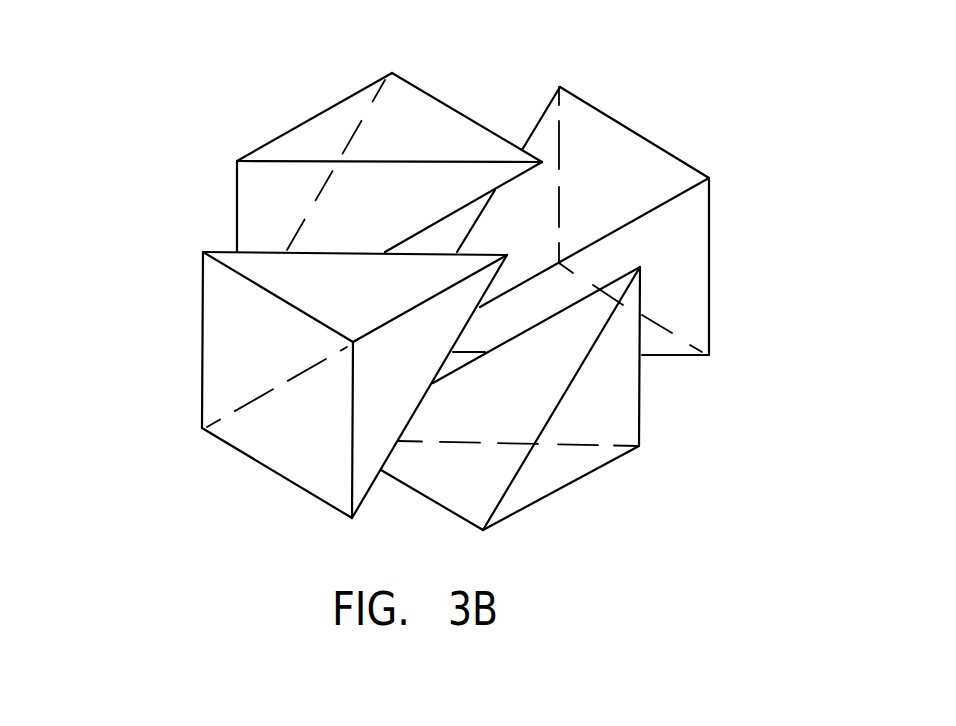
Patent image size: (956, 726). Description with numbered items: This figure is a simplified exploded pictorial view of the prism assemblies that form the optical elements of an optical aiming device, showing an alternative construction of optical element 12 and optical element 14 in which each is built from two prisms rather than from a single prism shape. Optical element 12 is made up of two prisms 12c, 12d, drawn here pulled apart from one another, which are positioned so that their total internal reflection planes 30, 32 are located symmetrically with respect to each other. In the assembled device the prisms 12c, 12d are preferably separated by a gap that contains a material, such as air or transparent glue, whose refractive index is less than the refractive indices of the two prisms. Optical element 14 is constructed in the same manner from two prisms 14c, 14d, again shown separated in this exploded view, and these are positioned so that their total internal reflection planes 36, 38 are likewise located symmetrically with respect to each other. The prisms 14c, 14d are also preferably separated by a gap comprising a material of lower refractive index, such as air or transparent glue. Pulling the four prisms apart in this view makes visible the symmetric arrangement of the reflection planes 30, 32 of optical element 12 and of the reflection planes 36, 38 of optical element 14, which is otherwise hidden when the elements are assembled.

The optical element 12 is at (226, 198).
The prism 12c is at (225, 337).
The prism 12d is at (334, 130).
The optical element 14 is at (709, 424).
The prism 14c is at (562, 467).
The prism 14d is at (635, 158).
The total internal reflection plane 30 is at (250, 249).
The total internal reflection plane 32 is at (398, 176).
The total internal reflection plane 36 is at (537, 318).
The total internal reflection plane 38 is at (693, 265).